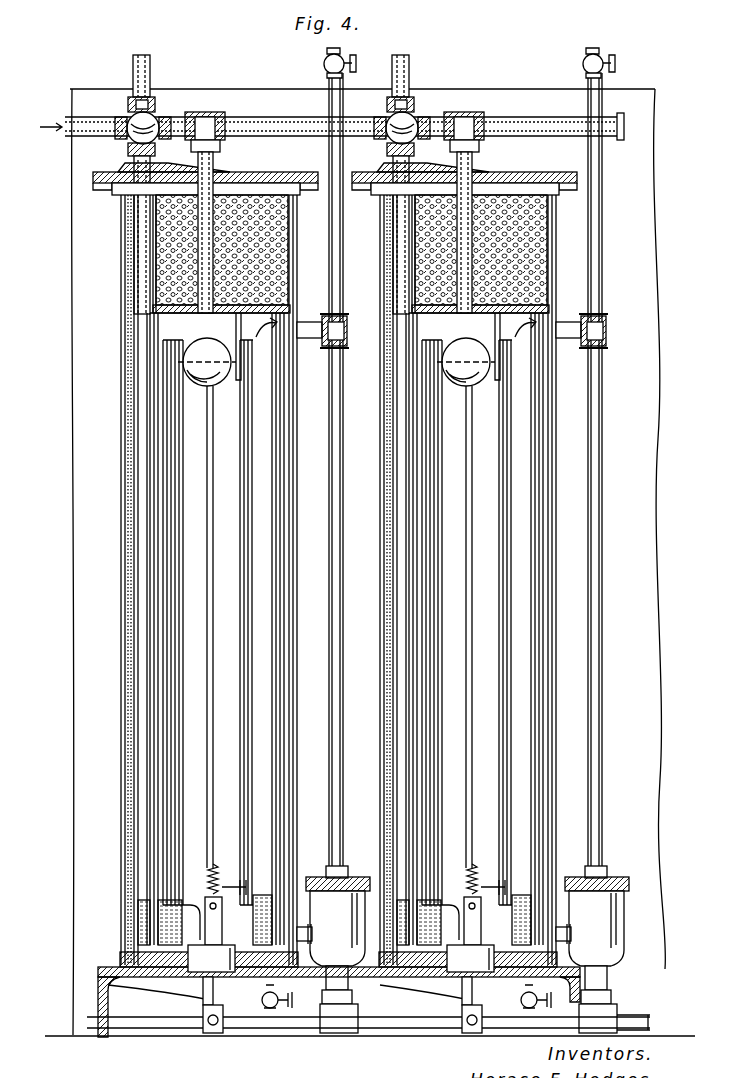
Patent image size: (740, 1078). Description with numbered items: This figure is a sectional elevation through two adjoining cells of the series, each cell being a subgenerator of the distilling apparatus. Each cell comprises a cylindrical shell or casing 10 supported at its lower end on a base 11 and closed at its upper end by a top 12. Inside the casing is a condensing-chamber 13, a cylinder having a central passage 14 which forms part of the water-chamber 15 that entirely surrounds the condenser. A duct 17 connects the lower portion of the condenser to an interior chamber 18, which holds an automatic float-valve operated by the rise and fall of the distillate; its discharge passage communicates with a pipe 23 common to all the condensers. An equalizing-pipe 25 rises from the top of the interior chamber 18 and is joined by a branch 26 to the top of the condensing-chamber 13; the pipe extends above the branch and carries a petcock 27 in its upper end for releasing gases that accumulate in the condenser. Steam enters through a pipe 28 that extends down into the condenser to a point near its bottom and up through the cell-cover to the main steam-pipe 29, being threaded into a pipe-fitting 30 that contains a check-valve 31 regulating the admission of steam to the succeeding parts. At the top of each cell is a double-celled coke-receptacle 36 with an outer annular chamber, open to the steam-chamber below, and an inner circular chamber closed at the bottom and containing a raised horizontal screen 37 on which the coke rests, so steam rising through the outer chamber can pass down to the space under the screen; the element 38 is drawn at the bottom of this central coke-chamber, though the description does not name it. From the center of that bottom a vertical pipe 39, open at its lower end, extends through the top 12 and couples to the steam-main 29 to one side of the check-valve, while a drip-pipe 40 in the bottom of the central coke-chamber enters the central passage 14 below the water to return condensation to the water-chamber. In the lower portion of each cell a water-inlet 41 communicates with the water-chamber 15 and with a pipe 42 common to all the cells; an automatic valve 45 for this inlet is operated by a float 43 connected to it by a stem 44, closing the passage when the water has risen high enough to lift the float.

The cylindrical shell or casing 10 is at (121, 608).
The base 11 is at (98, 990).
The top 12 is at (276, 172).
The condensing-chamber 13 is at (288, 401).
The central passage 14 is at (214, 789).
The water-chamber 15 is at (122, 962).
The duct 17 is at (312, 932).
The interior chamber 18 is at (315, 936).
The pipe 23 is at (640, 1016).
The equalizing-pipe 25 is at (344, 526).
The branch 26 is at (312, 322).
The petcock 27 is at (323, 70).
The pipe 28 is at (123, 742).
The main steam-pipe 29 is at (72, 118).
The pipe-fitting 30 is at (133, 113).
The check-valve 31 is at (156, 107).
The coke-receptacle 36 is at (152, 259).
The horizontal screen 37 is at (150, 317).
The perforated plate 38 is at (205, 311).
The pipe 39 is at (192, 178).
The drip-pipe 40 is at (240, 381).
The water-inlet 41 is at (198, 994).
The pipe 42 is at (215, 1034).
The float 43 is at (336, 362).
The stem 44 is at (207, 523).
The automatic valve 45 is at (208, 899).